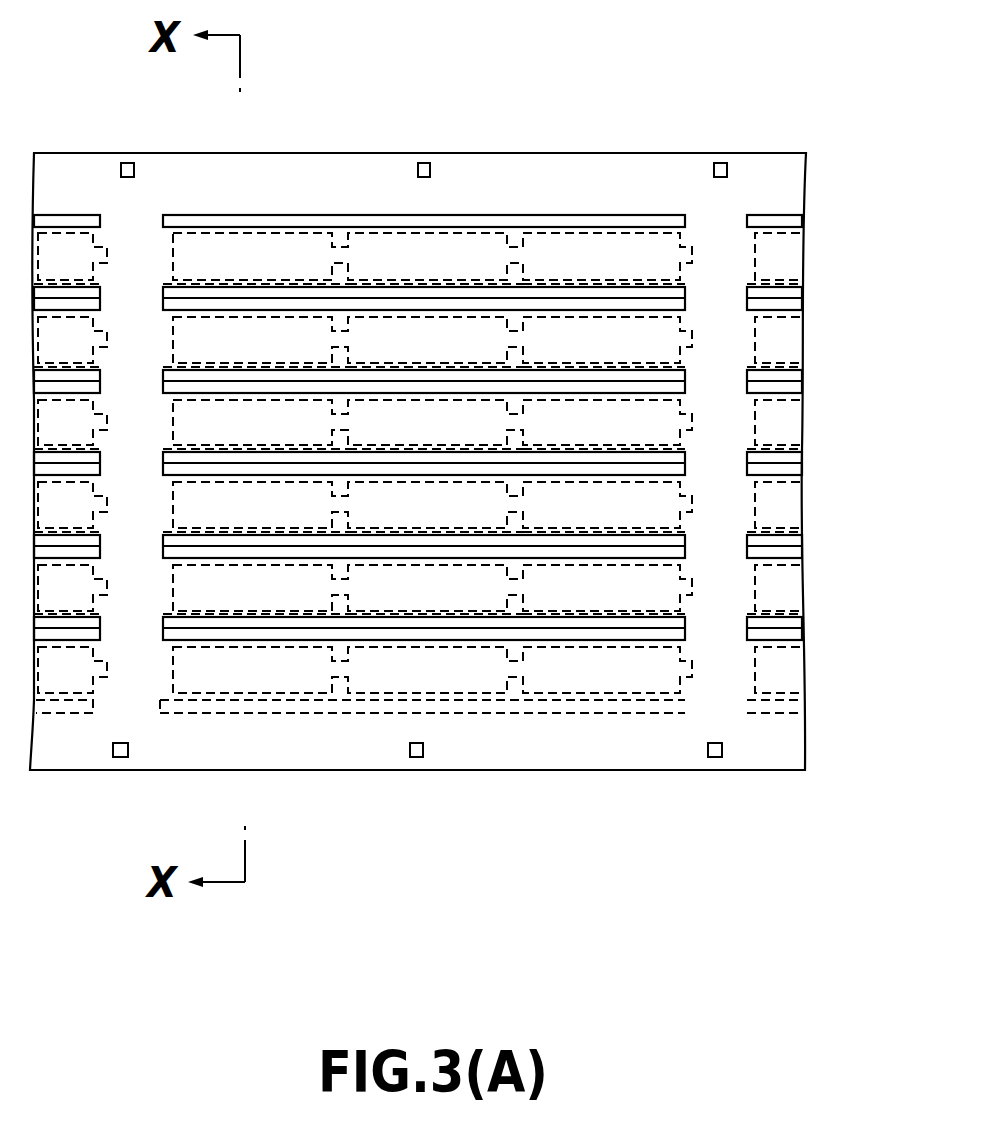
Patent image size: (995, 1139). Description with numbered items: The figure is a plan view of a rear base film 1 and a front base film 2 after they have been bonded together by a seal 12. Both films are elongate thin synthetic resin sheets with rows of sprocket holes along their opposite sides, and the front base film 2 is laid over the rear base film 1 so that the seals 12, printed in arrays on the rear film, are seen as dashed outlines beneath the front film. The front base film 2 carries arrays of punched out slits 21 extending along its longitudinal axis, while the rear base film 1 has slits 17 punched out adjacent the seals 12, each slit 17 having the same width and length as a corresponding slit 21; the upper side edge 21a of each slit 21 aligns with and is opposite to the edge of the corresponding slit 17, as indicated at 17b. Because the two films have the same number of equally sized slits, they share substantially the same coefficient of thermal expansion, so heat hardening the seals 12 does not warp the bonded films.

The rear base film 1 is at (580, 140).
The front base film 2 is at (642, 140).
The seal 12 is at (458, 233).
The slit opening 17 is at (418, 495).
The hidden lead edge portion 17b is at (385, 537).
The slit opening 21 is at (262, 216).
The upper side edge of slit 21a is at (360, 214).